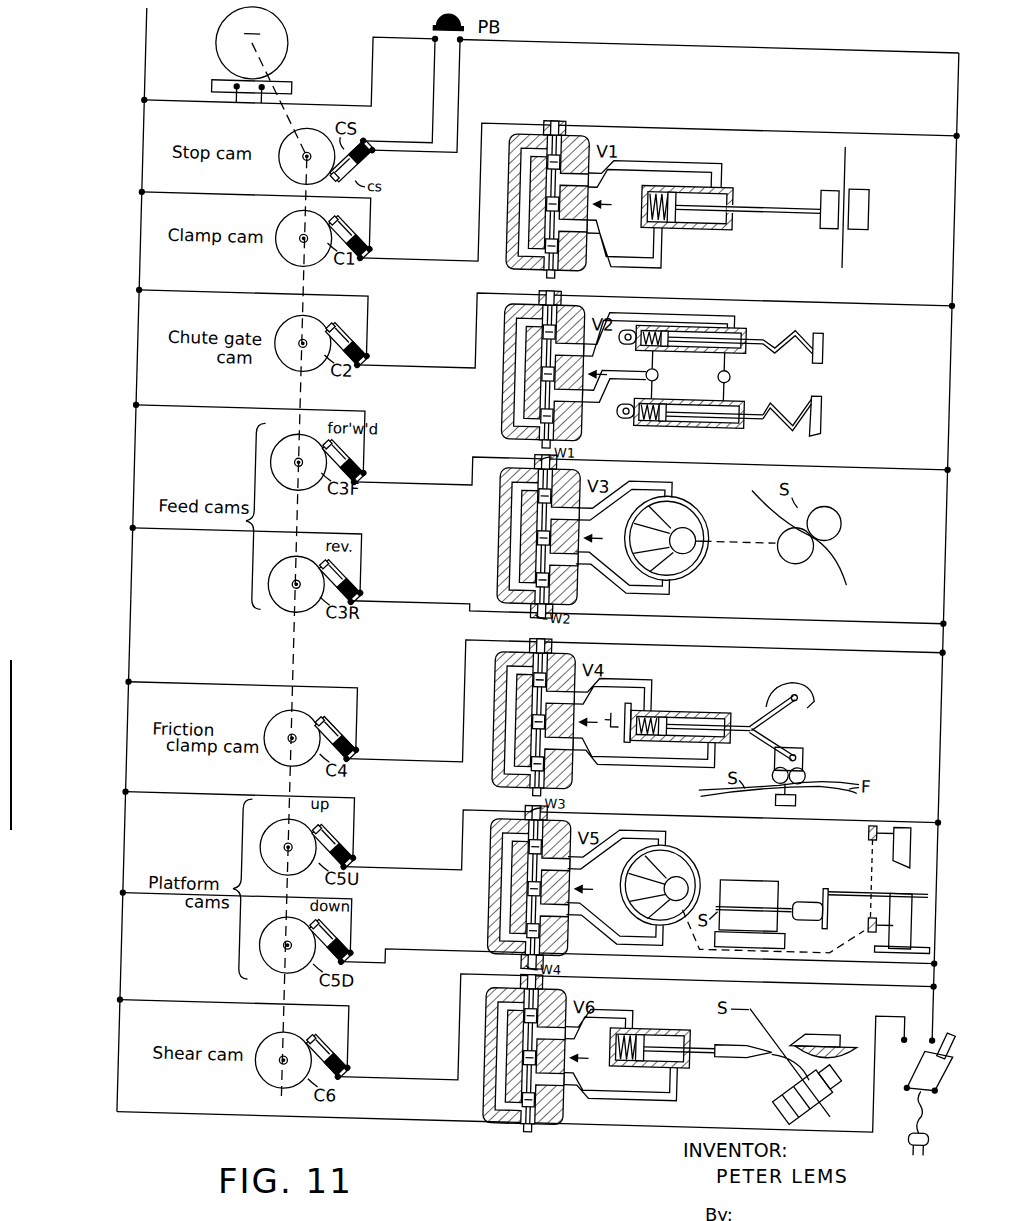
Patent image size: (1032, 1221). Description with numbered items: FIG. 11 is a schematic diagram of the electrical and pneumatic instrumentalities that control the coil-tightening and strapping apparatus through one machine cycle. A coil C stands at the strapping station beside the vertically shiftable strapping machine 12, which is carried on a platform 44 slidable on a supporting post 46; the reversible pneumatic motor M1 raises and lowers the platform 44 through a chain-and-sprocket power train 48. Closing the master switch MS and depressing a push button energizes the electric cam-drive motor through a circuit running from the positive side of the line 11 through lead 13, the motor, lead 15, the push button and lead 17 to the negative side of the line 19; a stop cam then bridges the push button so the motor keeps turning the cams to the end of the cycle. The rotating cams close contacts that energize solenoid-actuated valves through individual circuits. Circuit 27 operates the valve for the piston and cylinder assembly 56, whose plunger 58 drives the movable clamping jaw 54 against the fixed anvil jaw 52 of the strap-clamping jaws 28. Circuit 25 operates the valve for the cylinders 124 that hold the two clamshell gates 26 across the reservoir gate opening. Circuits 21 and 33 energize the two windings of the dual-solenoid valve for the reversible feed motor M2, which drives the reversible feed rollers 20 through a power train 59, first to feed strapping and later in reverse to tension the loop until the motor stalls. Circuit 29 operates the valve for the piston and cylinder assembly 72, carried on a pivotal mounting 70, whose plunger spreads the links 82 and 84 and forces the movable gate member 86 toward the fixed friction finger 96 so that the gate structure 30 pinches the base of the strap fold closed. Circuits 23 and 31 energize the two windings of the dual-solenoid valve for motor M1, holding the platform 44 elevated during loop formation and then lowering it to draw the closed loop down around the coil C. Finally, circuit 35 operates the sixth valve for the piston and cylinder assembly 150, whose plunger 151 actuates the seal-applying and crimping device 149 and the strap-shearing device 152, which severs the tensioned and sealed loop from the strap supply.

The line 11 is at (147, 600).
The lead 13 is at (184, 100).
The lead 15 is at (338, 101).
The lead 17 is at (709, 60).
The line 19 is at (951, 600).
The circuit 21 is at (434, 478).
The circuit 23 is at (428, 860).
The circuit 25 is at (432, 360).
The circuit 27 is at (430, 255).
The circuit 29 is at (430, 752).
The circuit 31 is at (443, 940).
The circuit 33 is at (428, 596).
The circuit 35 is at (440, 1074).
The strap-clamping jaws 28 is at (854, 163).
The fixed anvil jaw 52 is at (832, 218).
The movable clamping jaw 54 is at (862, 226).
The pneumatic piston and cylinder assembly 56 is at (686, 214).
The plunger 58 is at (788, 188).
The cylinders 124 is at (758, 316).
The clamshell gates 26 is at (834, 330).
The reversible feed rollers 20 is at (862, 508).
The power train 59 is at (757, 530).
The pivotal mounting 70 is at (632, 701).
The pneumatic piston and cylinder assembly 72 is at (742, 698).
The spreader links 82 is at (816, 687).
The gate structure 30 is at (840, 713).
The spreader links 84 is at (796, 742).
The movable gate member 86 is at (824, 736).
The fixed gate member 96 is at (817, 788).
The strapping machine 12 is at (838, 872).
The platform 44 is at (880, 875).
The power train 48 is at (890, 836).
The supporting post 46 is at (930, 844).
The piston and cylinder assembly 150 is at (696, 1015).
The plunger 151 is at (745, 1022).
The strap-shearing device 152 is at (854, 1013).
The seal-applying and crimping device 149 is at (804, 1082).
The reversible pneumatic motor M1 is at (704, 838).
The reversible pneumatic motor M2 is at (704, 494).
The coil C is at (774, 867).
The master switch MS is at (918, 1093).